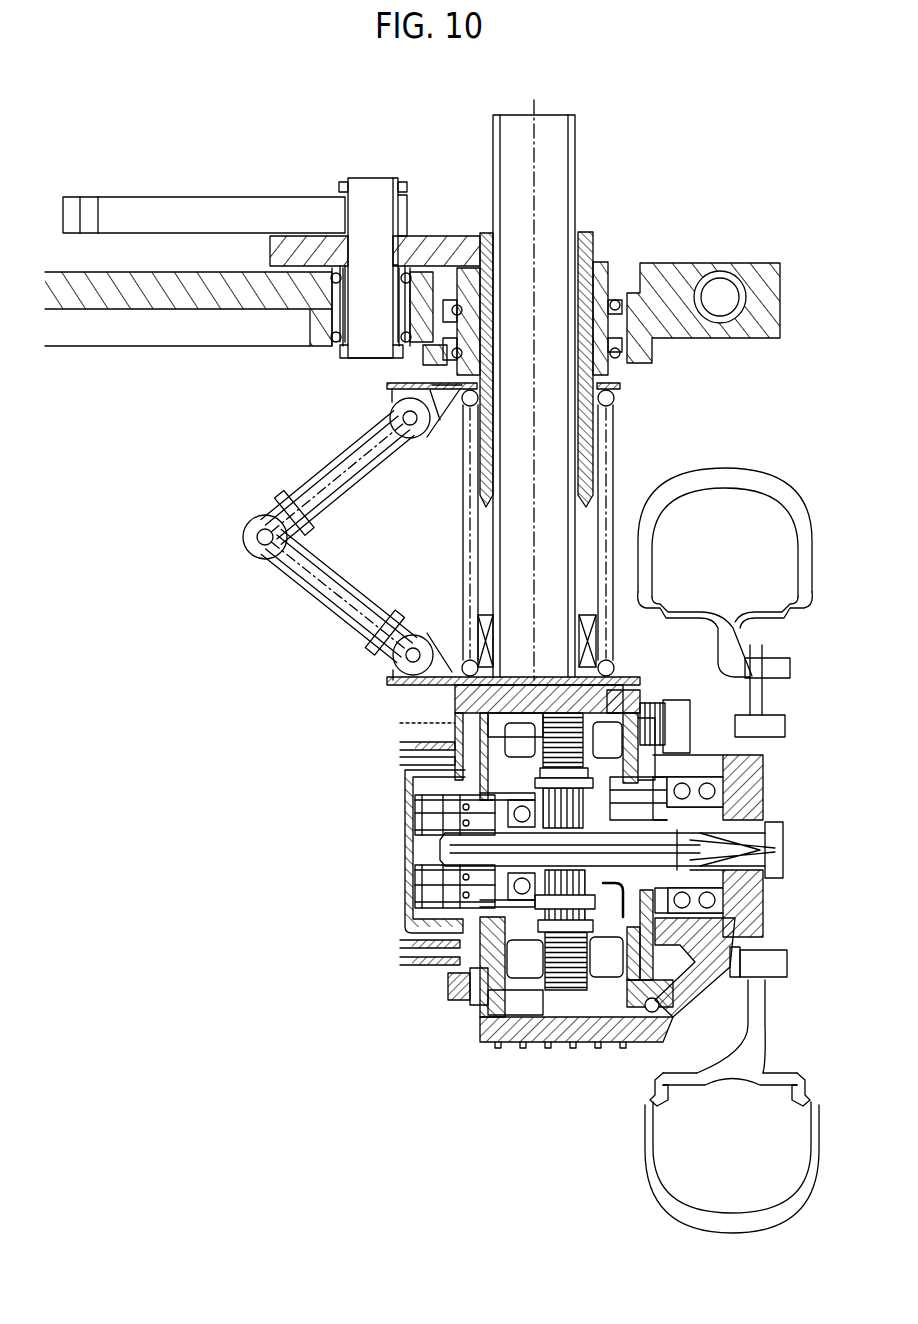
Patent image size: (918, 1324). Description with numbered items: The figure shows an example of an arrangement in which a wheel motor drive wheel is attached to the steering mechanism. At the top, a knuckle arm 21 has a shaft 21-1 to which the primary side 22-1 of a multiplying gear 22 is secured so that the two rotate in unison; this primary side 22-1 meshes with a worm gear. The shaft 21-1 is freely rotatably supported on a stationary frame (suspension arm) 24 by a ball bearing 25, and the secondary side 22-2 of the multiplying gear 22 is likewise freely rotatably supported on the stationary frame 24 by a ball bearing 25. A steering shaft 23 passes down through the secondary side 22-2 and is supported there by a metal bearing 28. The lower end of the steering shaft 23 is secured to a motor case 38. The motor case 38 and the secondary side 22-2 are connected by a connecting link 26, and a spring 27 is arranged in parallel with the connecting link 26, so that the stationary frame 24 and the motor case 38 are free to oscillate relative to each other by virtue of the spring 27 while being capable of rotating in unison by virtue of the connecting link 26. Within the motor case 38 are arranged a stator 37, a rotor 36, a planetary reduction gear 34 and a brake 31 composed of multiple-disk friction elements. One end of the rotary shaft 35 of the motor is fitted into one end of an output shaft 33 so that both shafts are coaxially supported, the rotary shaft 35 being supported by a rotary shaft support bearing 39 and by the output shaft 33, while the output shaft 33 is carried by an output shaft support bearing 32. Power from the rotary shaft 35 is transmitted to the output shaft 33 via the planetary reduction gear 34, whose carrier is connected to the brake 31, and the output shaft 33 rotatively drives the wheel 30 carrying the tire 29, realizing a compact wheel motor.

The knuckle arm 21 is at (226, 195).
The shaft 21-1 is at (377, 178).
The multiplying gear 22 is at (450, 156).
The primary side 22-1 is at (418, 236).
The secondary side 22-2 is at (485, 233).
The steering shaft 23 is at (566, 157).
The stationary frame (suspension arm) 24 is at (181, 346).
The ball bearing 25 is at (338, 346).
The connecting link 26 is at (267, 505).
The spring 27 is at (462, 482).
The metal bearing 28 is at (580, 232).
The tire 29 is at (758, 470).
The wheel 30 is at (772, 700).
The brake 31 is at (650, 700).
The output shaft support bearing 32 is at (748, 792).
The output shaft 33 is at (786, 838).
The planetary reduction gear 34 is at (690, 826).
The rotary shaft 35 is at (447, 850).
The rotor 36 is at (470, 907).
The stator 37 is at (450, 992).
The motor case 38 is at (470, 1030).
The rotary shaft support bearing 39 is at (460, 883).